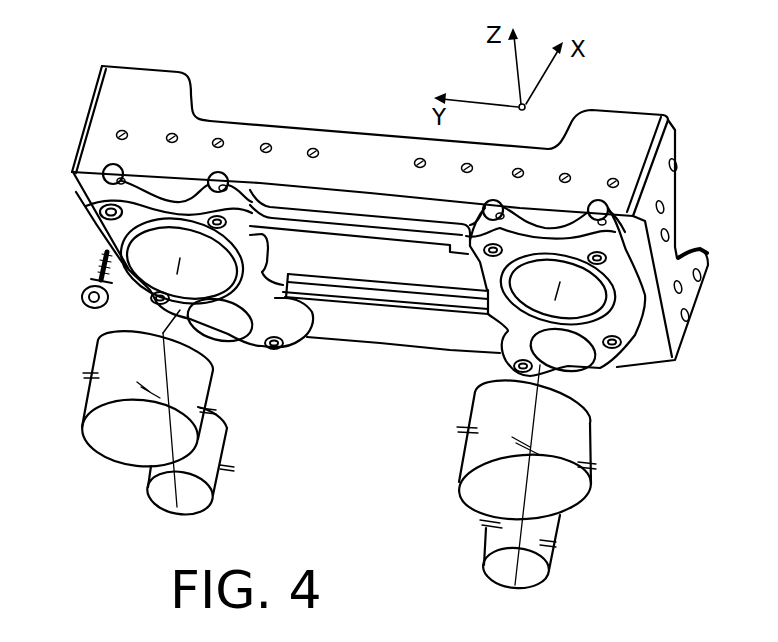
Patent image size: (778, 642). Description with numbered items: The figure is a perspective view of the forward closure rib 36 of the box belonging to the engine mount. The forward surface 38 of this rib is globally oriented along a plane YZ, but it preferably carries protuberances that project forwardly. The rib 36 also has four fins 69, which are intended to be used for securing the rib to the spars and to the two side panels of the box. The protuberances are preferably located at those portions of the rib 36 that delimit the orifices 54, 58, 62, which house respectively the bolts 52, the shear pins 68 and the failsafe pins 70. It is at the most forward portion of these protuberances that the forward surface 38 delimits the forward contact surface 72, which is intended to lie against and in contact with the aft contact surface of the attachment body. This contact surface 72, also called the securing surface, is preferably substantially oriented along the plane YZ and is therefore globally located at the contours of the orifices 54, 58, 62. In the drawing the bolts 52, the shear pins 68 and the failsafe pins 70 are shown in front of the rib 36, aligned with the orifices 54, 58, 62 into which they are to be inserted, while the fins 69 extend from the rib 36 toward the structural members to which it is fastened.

The forward closure rib 36 is at (247, 119).
The forward surface 38 is at (333, 200).
The bolts 52 is at (90, 288).
The orifices 54 is at (112, 212).
The orifices 58 is at (157, 246).
The orifices 62 is at (218, 326).
The shear pins 68 is at (103, 436).
The fins 69 is at (672, 182).
The failsafe pins 70 is at (165, 497).
The forward contact surface 72 is at (522, 328).